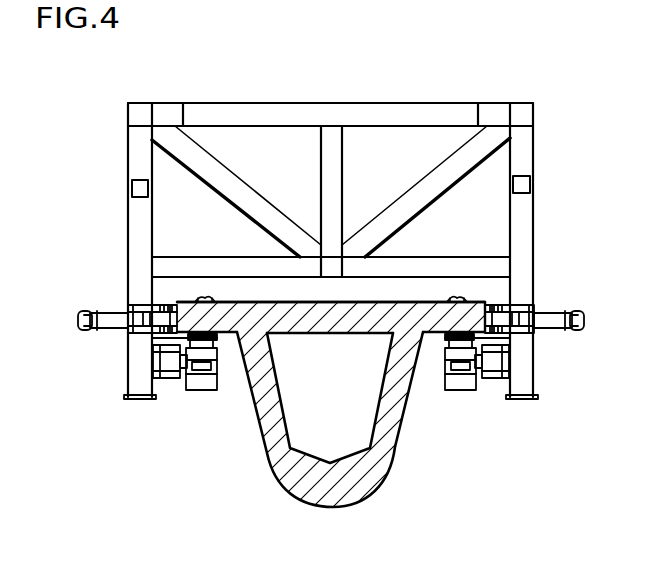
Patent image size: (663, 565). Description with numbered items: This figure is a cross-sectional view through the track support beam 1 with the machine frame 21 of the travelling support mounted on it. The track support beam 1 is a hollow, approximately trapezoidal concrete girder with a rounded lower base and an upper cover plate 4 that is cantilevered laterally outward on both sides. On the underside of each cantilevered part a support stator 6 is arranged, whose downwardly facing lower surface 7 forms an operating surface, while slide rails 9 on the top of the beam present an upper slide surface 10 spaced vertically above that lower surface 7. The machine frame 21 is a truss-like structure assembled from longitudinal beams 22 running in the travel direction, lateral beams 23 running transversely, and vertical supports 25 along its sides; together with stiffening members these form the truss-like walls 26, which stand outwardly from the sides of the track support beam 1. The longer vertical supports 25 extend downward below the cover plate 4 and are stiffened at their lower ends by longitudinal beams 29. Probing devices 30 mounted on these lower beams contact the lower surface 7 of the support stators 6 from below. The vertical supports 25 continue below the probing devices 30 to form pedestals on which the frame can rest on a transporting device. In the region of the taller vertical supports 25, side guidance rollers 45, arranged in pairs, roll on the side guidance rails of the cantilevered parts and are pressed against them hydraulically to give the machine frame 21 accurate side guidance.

The track support beam 1 is at (272, 478).
The cover plate 4 is at (265, 312).
The support stator 6 is at (220, 335).
The lower surface 7 is at (222, 311).
The slide rail 9 is at (205, 300).
The slide surface 10 is at (210, 300).
The machine frame 21 is at (420, 98).
The longitudinal beam 22 is at (140, 111).
The lateral beam 23 is at (362, 108).
The vertical support 25 is at (135, 208).
The truss-like wall 26 is at (124, 258).
The longitudinal beam 29 is at (137, 365).
The probing device 30 is at (206, 386).
The side guidance roller 45 is at (128, 327).